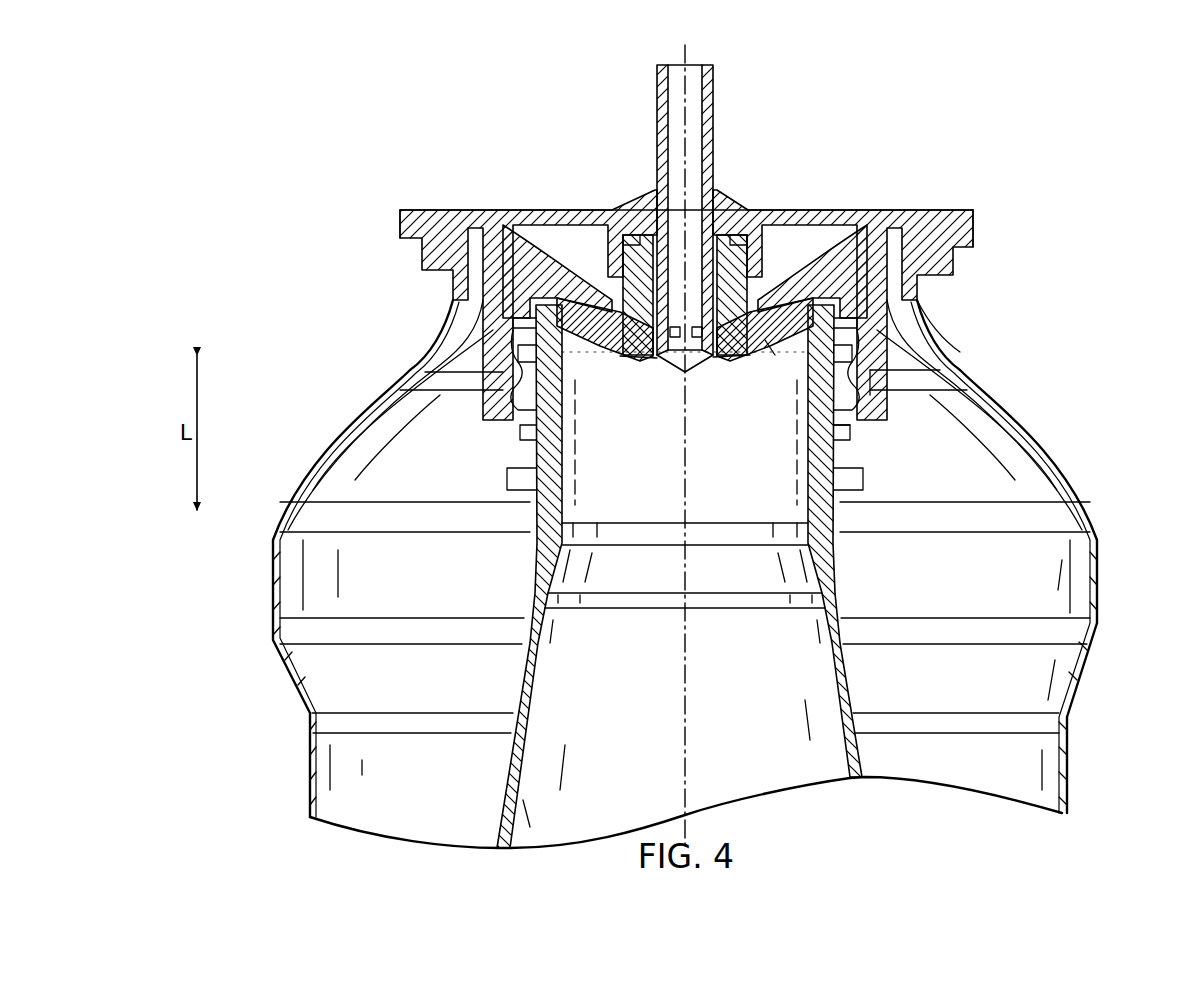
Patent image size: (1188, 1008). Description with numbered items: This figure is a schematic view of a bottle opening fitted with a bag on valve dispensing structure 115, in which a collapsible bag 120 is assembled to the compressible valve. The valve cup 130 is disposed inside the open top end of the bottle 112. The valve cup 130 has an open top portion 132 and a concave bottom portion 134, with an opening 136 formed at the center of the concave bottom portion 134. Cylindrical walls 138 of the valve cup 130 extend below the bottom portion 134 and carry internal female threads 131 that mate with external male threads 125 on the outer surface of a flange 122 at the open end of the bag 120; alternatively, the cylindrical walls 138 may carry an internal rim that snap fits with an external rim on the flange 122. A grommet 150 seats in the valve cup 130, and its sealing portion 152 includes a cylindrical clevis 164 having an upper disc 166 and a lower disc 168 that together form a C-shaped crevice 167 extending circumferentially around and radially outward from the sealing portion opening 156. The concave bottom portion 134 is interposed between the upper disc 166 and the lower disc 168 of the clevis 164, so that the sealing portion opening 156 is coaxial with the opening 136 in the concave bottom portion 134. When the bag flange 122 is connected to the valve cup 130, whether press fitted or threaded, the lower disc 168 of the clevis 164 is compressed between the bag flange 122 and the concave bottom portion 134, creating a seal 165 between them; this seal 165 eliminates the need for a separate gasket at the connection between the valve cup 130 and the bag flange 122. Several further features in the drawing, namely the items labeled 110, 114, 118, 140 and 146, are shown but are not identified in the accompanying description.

The longitudinal axis 114 is at (690, 56).
The tube 140 is at (655, 95).
The tube channel 146 is at (712, 137).
The closure assembly 118 is at (406, 168).
The valve cup 130 is at (478, 209).
The dispensing system 110 is at (540, 195).
The grommet 150 is at (640, 236).
The open top portion 132 is at (873, 185).
The upper disc 166 is at (607, 300).
The concave bottom portion 134 is at (820, 292).
The internal threads 131 is at (882, 352).
The bottle 112 is at (333, 397).
The external threads 125 is at (872, 386).
The seal 165 is at (542, 346).
The lower disc 168 is at (577, 360).
The C-shaped crevice 167 is at (640, 366).
The cylindrical clevis 164 is at (656, 392).
The sealing portion opening 156 is at (716, 360).
The opening 136 is at (748, 362).
The sealing portion 152 is at (773, 372).
The cylindrical walls 138 is at (872, 410).
The flange 122 is at (855, 440).
The bag on valve dispensing structure 115 is at (523, 662).
The bag 120 is at (850, 682).